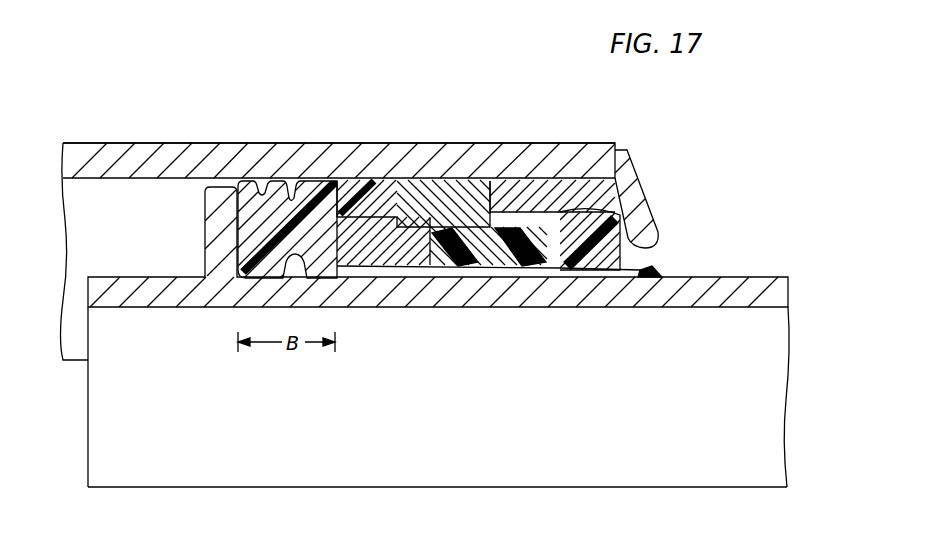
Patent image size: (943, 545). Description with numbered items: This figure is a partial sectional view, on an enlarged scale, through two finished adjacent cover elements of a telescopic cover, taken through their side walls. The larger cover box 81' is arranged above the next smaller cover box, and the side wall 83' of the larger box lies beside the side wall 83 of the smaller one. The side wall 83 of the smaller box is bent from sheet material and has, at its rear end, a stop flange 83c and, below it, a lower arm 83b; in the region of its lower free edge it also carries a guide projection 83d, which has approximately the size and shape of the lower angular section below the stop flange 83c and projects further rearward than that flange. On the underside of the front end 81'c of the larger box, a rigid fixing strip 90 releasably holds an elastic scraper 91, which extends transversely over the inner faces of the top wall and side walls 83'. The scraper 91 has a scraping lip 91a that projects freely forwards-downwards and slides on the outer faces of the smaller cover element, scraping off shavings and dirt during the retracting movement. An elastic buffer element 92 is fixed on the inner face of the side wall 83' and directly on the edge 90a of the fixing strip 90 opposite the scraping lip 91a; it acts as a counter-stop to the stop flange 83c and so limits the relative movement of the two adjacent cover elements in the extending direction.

The cover box 81' is at (339, 123).
The side wall 83' is at (339, 114).
The front end 81'c is at (624, 168).
The side wall 83 is at (438, 270).
The stop flange 83c is at (222, 213).
The guide projection 83d is at (100, 415).
The lower arm 83b is at (757, 443).
The elastic buffer element 92 is at (336, 195).
The edge of the rigid fixing strip 90a is at (386, 183).
The rigid fixing strip 90 is at (494, 207).
The elastic scraper 91 is at (608, 237).
The scraping lip 91a is at (650, 272).